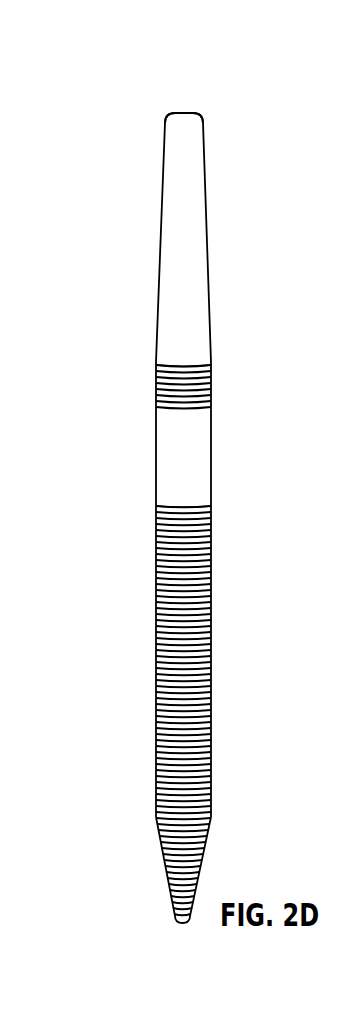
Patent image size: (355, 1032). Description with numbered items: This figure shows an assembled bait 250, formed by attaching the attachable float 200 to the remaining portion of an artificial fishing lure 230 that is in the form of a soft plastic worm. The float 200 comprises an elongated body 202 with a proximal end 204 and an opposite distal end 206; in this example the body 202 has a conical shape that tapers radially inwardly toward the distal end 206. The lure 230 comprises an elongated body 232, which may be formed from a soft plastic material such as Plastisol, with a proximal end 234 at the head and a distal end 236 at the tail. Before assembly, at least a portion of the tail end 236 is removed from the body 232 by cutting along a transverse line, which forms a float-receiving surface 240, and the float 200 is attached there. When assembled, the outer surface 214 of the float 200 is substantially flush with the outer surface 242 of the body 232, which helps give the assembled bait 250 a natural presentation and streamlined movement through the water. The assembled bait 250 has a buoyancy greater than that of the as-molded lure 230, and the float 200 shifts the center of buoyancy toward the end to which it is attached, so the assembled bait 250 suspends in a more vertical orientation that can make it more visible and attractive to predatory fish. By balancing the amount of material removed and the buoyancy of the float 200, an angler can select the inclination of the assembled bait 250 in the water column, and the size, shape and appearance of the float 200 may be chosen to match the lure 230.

The attachable float 200 is at (238, 108).
The elongated body 202 is at (204, 243).
The proximal end 204 is at (165, 367).
The distal end 206 is at (181, 112).
The outer surface 214 is at (163, 250).
The artificial fishing lure 230 is at (233, 683).
The elongated body 232 is at (195, 580).
The proximal end 234 is at (190, 843).
The distal end 236 is at (183, 460).
The float-receiving surface 240 is at (193, 362).
The outer surface 242 is at (155, 500).
The assembled bait 250 is at (125, 60).